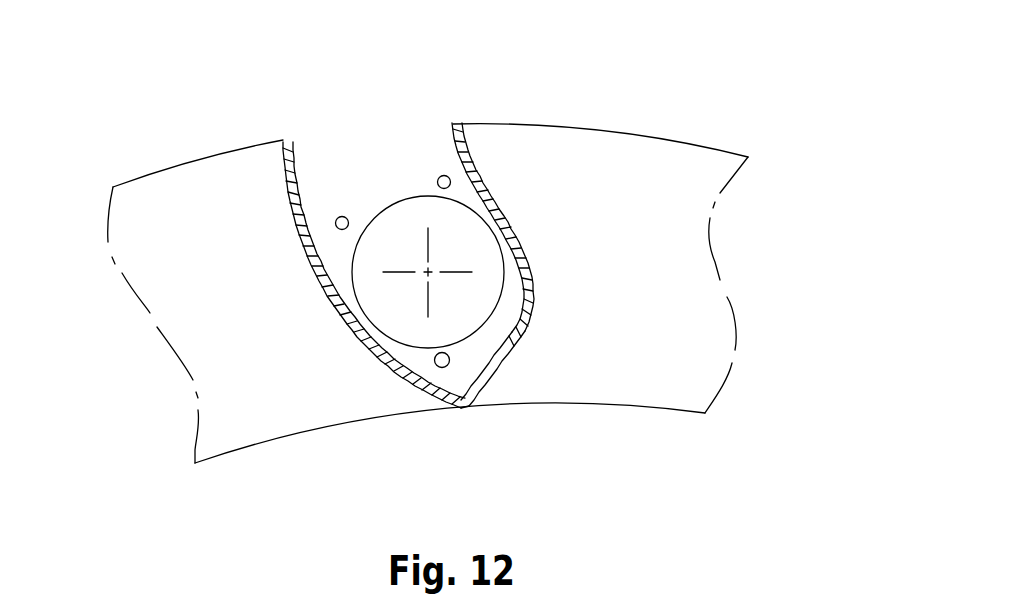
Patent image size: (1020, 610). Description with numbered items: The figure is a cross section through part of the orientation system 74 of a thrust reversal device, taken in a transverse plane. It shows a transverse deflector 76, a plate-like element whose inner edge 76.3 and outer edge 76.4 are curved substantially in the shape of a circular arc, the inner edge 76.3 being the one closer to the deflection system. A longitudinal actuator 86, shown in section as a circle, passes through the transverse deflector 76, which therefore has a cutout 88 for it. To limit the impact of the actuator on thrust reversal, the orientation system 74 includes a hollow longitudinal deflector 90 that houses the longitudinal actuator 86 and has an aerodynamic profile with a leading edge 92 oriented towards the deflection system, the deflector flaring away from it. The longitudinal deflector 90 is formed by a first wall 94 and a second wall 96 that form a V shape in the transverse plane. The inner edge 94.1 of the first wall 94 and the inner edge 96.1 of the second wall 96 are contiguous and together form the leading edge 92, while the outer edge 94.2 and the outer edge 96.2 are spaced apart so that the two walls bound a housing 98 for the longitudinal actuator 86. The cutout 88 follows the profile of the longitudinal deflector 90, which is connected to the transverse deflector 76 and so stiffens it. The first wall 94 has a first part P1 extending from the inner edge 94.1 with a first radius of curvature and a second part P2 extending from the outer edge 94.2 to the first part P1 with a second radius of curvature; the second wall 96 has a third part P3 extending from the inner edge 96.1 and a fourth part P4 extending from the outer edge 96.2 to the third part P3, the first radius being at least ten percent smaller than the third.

The orientation system 74 is at (681, 85).
The transverse deflector 76 is at (702, 150).
The inner edge 76.3 is at (667, 413).
The outer edge 76.4 is at (581, 127).
The longitudinal actuator 86 is at (410, 195).
The cutout 88 is at (337, 157).
The longitudinal deflector 90 is at (338, 328).
The leading edge 92 is at (465, 403).
The first wall 94 is at (532, 356).
The inner edge 94.1 is at (480, 394).
The outer edge 94.2 is at (453, 123).
The second wall 96 is at (363, 352).
The inner edge 96.1 is at (450, 396).
The outer edge 96.2 is at (292, 140).
The housing 98 is at (360, 158).
The first part P1 is at (537, 307).
The second part P2 is at (483, 184).
The third part P3 is at (400, 362).
The fourth part P4 is at (298, 218).